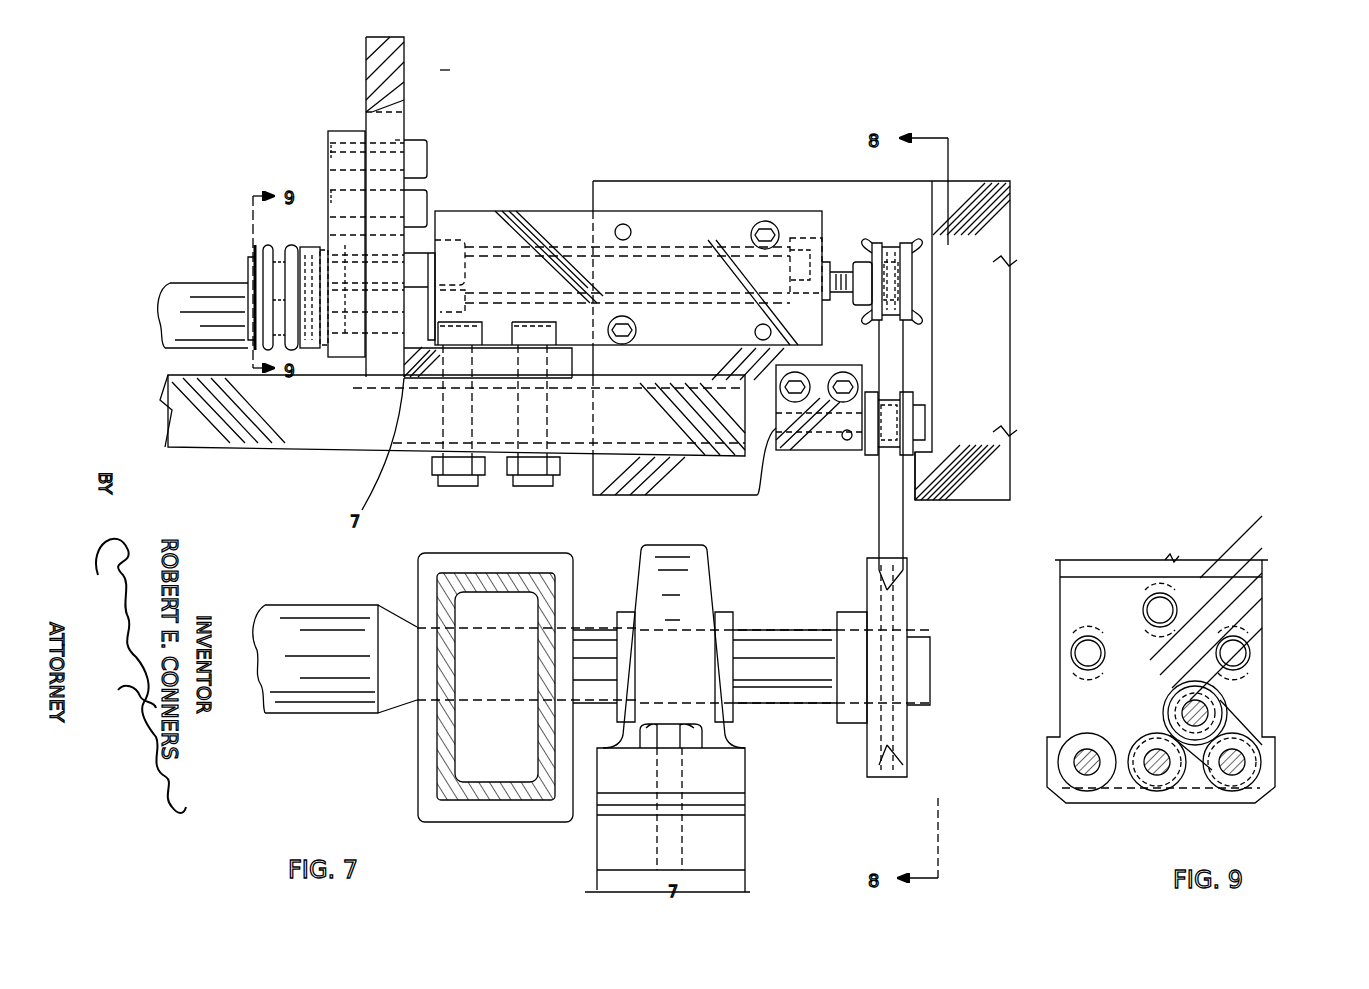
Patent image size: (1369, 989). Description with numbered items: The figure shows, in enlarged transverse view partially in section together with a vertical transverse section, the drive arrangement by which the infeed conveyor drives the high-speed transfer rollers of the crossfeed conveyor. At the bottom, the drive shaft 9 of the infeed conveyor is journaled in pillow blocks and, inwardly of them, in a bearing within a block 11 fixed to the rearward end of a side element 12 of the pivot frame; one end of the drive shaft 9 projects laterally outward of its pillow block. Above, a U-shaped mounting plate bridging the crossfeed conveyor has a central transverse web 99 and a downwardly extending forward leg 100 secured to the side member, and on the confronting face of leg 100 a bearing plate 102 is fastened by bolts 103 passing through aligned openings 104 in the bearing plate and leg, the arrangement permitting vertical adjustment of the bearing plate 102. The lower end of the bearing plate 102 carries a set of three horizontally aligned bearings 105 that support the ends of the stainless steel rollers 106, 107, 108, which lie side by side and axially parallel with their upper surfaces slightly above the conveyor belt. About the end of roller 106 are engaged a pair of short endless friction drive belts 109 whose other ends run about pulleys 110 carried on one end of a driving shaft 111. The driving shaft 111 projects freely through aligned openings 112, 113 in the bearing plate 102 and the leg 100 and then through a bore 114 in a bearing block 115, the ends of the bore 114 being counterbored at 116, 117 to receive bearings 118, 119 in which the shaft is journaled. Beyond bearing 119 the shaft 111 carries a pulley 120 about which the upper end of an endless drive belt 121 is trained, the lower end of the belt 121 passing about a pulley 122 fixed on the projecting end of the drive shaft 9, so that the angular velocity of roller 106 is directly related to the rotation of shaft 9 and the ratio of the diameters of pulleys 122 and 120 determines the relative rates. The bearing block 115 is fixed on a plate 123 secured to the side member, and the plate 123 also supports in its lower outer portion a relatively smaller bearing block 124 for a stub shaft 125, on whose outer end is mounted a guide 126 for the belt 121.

In FIG. 7, the central transverse web 99 is at (407, 60).
In FIG. 7, the forward leg 100 is at (412, 160).
In FIG. 9, the forward leg 100 is at (1092, 560).
In FIG. 7, the bearing plate 102 is at (348, 133).
In FIG. 9, the bearing plate 102 is at (1110, 577).
In FIG. 7, the bolts 103 is at (400, 140).
In FIG. 9, the bolts 103 is at (1180, 610).
In FIG. 7, the openings 104 is at (340, 143).
In FIG. 9, the openings 104 is at (1218, 600).
In FIG. 7, the bearings 105 is at (353, 375).
In FIG. 7, the high-speed roller 106 is at (160, 300).
In FIG. 9, the high-speed roller 106 is at (1242, 772).
In FIG. 9, the high-speed roller 107 is at (1167, 772).
In FIG. 9, the high-speed roller 108 is at (1097, 772).
In FIG. 7, the friction drive belt 109 is at (287, 256).
In FIG. 9, the friction drive belt 109 is at (1208, 718).
In FIG. 7, the pulley 110 is at (264, 262).
In FIG. 9, the pulley 110 is at (1218, 700).
In FIG. 7, the driving shaft 111 is at (250, 280).
In FIG. 9, the driving shaft 111 is at (1223, 715).
In FIG. 7, the opening 112 is at (350, 252).
In FIG. 7, the opening 113 is at (427, 250).
In FIG. 7, the bore 114 is at (652, 250).
In FIG. 7, the bearing block 115 is at (668, 245).
In FIG. 7, the counterbore 116 is at (447, 240).
In FIG. 7, the counterbore 117 is at (812, 238).
In FIG. 7, the bearing 118 is at (455, 245).
In FIG. 7, the bearing 119 is at (810, 240).
In FIG. 7, the pulley 120 is at (920, 260).
In FIG. 7, the endless drive belt 121 is at (905, 335).
In FIG. 7, the pulley 122 is at (910, 590).
In FIG. 7, the plate 123 is at (707, 181).
In FIG. 7, the bearing block 124 is at (855, 370).
In FIG. 7, the stub shaft 125 is at (925, 405).
In FIG. 7, the guide 126 is at (925, 445).
In FIG. 7, the drive shaft 9 is at (330, 713).
In FIG. 7, the block 11 is at (415, 726).
In FIG. 7, the side element 12 is at (437, 760).